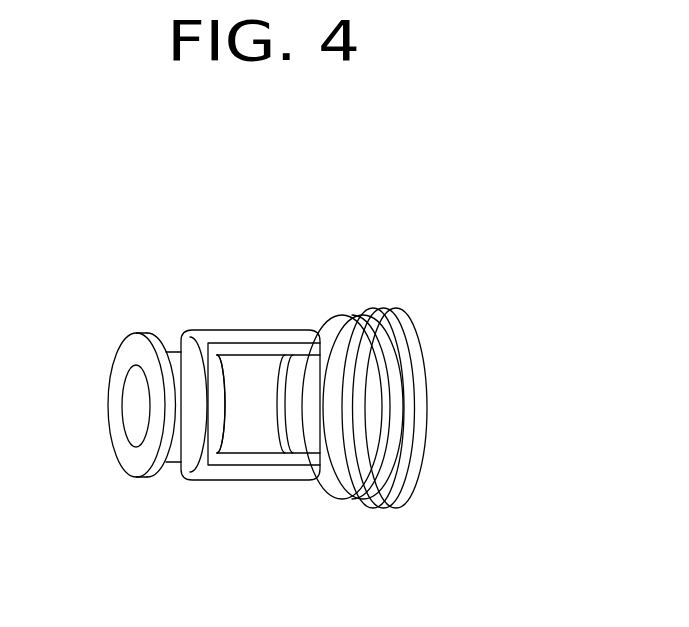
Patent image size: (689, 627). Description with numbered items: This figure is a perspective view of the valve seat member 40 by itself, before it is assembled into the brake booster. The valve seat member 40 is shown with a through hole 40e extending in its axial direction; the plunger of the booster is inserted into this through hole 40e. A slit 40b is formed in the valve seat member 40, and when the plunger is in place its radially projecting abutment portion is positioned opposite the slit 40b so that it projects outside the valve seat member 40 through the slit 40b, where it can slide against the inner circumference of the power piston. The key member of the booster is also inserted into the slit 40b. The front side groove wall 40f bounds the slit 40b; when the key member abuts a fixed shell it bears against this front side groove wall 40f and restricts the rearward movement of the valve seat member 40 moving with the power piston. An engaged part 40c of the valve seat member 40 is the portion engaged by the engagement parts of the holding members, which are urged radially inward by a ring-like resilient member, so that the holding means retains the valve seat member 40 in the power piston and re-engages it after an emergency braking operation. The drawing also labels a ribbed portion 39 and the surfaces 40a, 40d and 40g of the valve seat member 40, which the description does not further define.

The valve seat member 40 is at (304, 382).
The annular ribs 39 is at (407, 312).
The cylindrical body 40a is at (235, 333).
The slit 40b is at (247, 375).
The engaged part 40c is at (140, 335).
The neck 40d is at (168, 352).
The through hole 40e is at (133, 413).
The front side groove wall 40f is at (223, 423).
The inner ring 40g is at (347, 397).